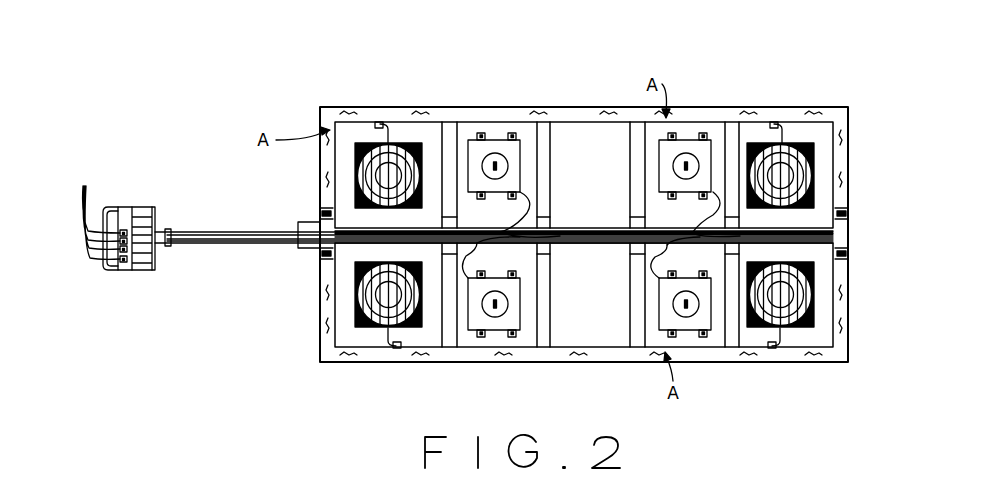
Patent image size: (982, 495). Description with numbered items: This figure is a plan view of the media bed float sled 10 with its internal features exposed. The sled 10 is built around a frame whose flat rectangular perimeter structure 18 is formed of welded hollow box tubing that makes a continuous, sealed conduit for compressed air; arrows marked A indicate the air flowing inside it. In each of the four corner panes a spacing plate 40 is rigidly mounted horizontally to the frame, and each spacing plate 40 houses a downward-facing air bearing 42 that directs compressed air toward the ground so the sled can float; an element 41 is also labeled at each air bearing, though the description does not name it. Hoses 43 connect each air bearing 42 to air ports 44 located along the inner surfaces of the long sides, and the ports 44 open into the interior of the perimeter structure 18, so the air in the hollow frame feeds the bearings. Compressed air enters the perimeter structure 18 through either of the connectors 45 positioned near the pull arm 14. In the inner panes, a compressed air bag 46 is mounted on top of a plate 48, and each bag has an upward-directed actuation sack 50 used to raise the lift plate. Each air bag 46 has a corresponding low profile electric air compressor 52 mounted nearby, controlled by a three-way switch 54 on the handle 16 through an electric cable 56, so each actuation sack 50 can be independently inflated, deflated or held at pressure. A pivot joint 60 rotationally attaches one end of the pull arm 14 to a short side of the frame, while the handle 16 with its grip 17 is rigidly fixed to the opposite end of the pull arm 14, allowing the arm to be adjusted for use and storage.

The sled 10 is at (250, 86).
The pull arm 14 is at (215, 229).
The handle 16 is at (148, 274).
The grip 17 is at (113, 207).
The perimeter structure 18 is at (850, 338).
The spacing plate 40 is at (338, 130).
The fan 41 is at (365, 143).
The air bearing 42 is at (807, 153).
The hoses 43 is at (405, 136).
The air ports 44 is at (379, 122).
The connectors 45 is at (320, 212).
The compressed air bag 46 is at (486, 140).
The plate 48 is at (530, 133).
The actuation sack 50 is at (484, 162).
The electric air compressor 52 is at (510, 152).
The three-way switch 54 is at (96, 208).
The electric cable 56 is at (563, 236).
The pivot joint 60 is at (300, 249).